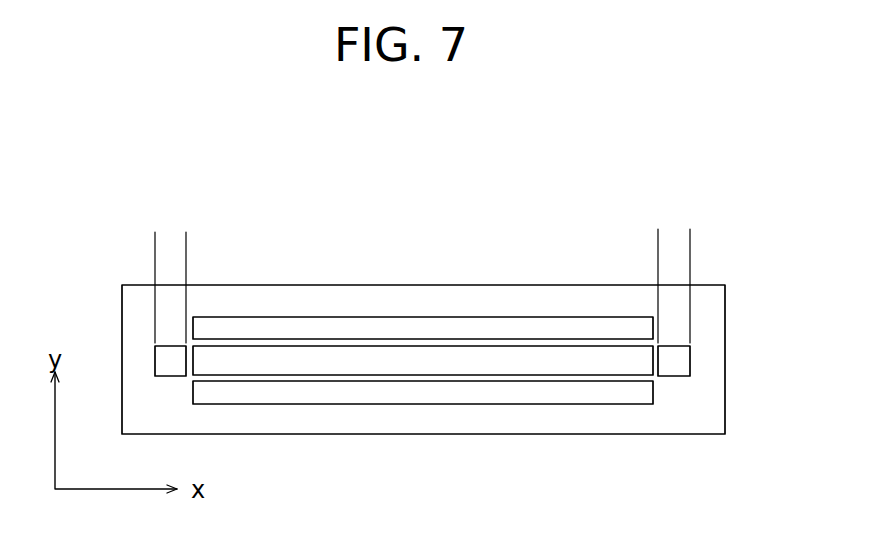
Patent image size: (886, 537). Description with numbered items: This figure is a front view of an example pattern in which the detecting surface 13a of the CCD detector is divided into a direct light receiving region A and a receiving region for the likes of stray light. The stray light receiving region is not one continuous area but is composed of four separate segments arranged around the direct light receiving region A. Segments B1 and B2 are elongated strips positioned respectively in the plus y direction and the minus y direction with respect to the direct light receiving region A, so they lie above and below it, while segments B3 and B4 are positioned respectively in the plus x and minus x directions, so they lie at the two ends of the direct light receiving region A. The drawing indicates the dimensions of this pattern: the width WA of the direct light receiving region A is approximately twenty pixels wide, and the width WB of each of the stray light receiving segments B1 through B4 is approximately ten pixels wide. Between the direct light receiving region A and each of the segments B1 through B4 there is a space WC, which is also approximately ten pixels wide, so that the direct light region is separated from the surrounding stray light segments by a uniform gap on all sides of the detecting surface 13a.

The detecting surface 13a is at (702, 385).
The stray light receiving segment B1 is at (427, 327).
The stray light receiving segment B2 is at (422, 392).
The stray light receiving segment B3 is at (163, 362).
The stray light receiving segment B4 is at (678, 356).
The direct light receiving region A is at (423, 361).
The width of the direct light receiving region WA is at (466, 310).
The width of the stray light receiving segments WB is at (120, 243).
The space between direct light receiving region and stray light receiving segments WC is at (269, 378).